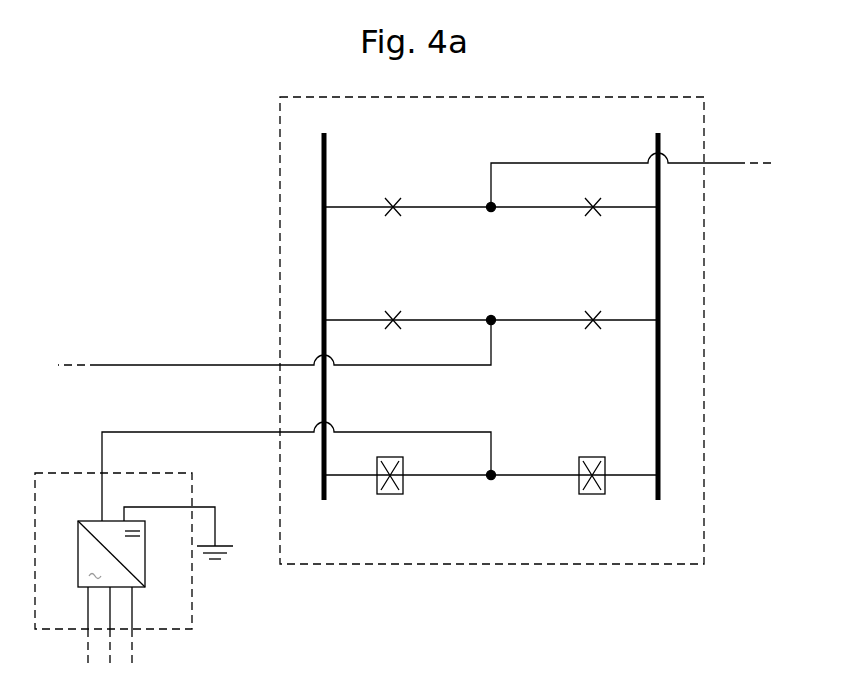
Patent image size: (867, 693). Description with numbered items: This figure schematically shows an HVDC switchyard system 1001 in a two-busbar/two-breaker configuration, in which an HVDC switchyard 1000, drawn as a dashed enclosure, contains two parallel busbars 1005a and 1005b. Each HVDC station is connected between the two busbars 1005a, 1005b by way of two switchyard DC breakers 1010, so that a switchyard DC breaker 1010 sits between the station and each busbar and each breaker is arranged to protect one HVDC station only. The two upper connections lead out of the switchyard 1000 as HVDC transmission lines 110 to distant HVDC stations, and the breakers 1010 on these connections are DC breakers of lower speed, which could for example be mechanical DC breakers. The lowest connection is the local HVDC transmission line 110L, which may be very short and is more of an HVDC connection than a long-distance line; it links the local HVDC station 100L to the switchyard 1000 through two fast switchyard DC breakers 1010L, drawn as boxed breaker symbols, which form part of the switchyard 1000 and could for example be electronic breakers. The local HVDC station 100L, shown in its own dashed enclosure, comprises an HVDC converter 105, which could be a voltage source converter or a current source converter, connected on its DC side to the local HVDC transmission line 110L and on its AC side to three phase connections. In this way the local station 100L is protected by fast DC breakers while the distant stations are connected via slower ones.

The HVDC switchyard system 1001 is at (700, 629).
The HVDC switchyard 1000 is at (492, 330).
The busbar 1005a is at (325, 303).
The busbar 1005b is at (658, 303).
The switchyard DC breaker 1010 is at (598, 223).
The fast switchyard DC breaker 1010L is at (590, 495).
The HVDC transmission line 110 is at (742, 163).
The local HVDC transmission line 110L is at (222, 430).
The local HVDC station 100L is at (192, 612).
The HVDC converter 105 is at (78, 568).